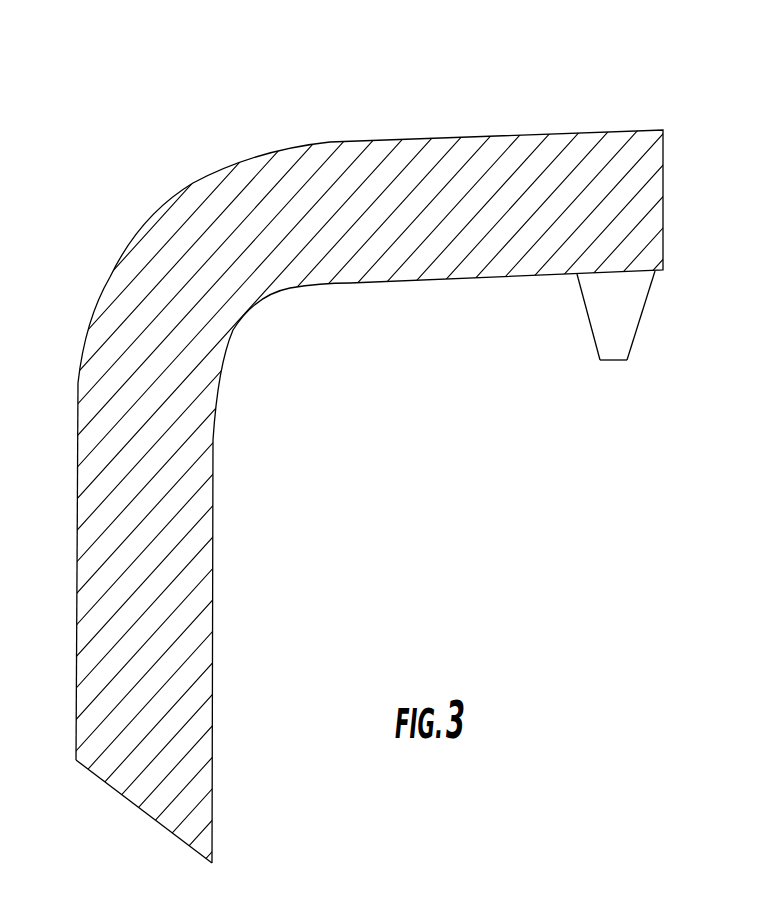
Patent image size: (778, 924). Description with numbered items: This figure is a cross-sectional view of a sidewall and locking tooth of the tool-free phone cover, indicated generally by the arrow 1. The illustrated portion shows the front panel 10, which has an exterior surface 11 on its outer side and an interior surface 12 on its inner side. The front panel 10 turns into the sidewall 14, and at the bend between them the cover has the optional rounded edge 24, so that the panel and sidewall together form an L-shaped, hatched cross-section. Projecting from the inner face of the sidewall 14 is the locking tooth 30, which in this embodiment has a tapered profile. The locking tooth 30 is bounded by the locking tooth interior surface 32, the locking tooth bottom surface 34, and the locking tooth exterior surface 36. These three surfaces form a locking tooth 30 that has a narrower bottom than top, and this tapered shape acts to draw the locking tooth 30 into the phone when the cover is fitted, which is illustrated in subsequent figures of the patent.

The article / protective cover assembly 1 is at (332, 108).
The front panel 10 is at (127, 278).
The exterior surface 11 is at (76, 548).
The interior surface 12 is at (215, 548).
The sidewall 14 is at (507, 157).
The rounded edge 24 is at (212, 172).
The locking tooth 30 is at (613, 345).
The locking tooth interior surface 32 is at (588, 313).
The locking tooth bottom surface 34 is at (614, 362).
The locking tooth exterior surface 36 is at (643, 305).